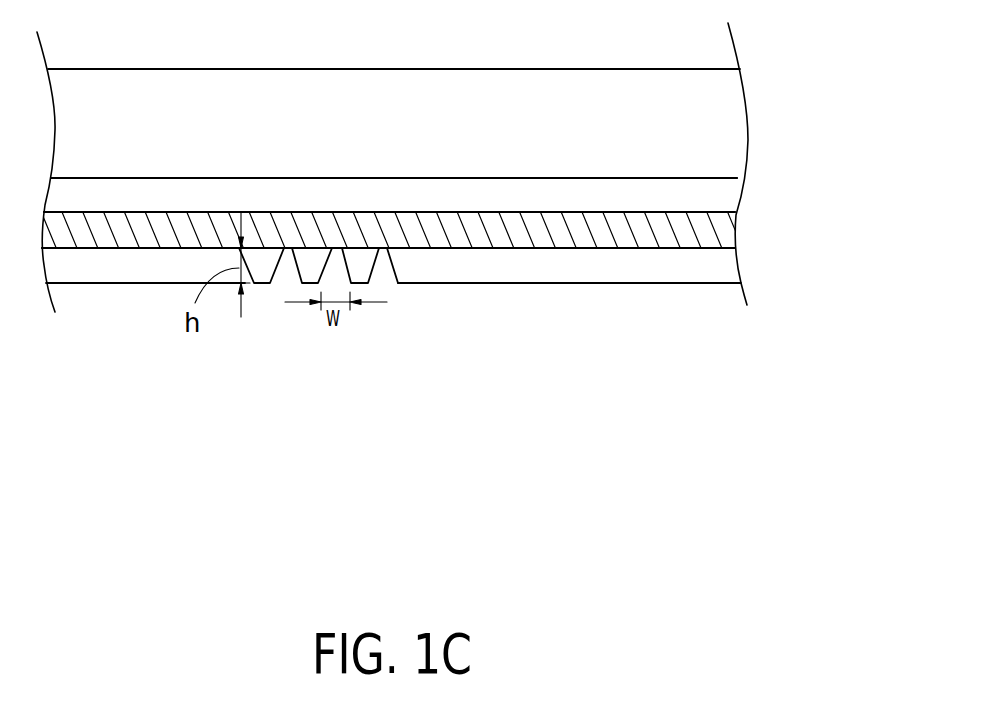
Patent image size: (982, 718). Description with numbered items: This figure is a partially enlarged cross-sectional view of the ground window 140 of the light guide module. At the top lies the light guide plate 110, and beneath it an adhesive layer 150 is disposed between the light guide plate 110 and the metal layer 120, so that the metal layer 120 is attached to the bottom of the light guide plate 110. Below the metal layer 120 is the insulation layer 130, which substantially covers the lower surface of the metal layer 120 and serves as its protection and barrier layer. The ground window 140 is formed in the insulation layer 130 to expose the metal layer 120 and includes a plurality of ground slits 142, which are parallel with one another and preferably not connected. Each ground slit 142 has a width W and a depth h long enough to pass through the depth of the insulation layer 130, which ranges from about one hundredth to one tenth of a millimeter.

The light guide plate 110 is at (730, 120).
The adhesive layer 150 is at (730, 198).
The metal layer 120 is at (730, 229).
The insulation layer 130 is at (730, 265).
The ground window 140 is at (319, 344).
The ground slits 142 is at (383, 275).